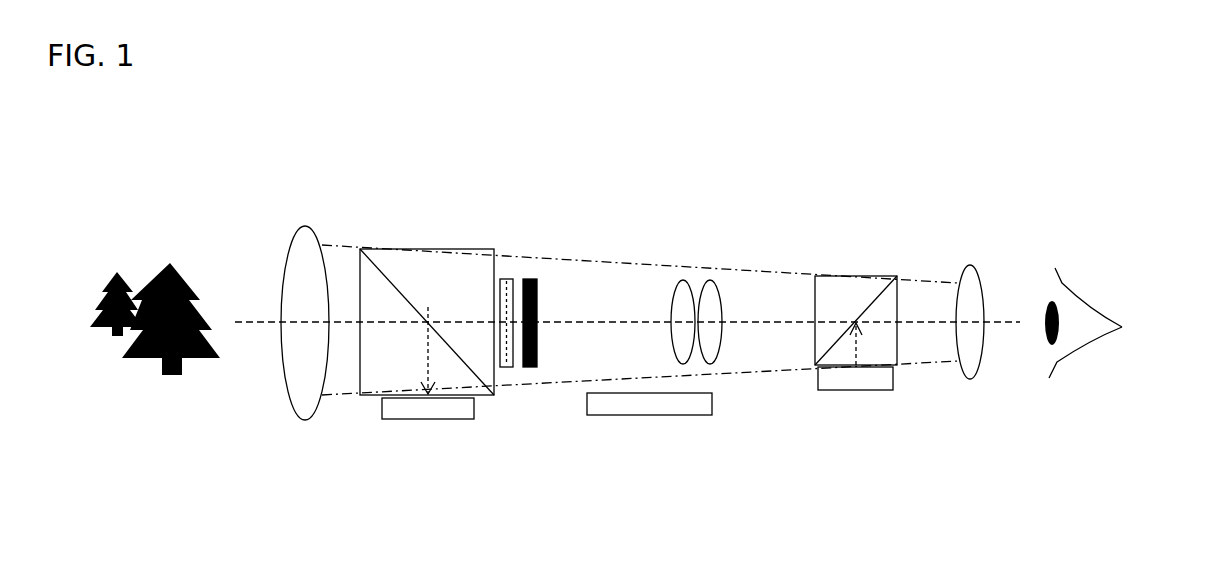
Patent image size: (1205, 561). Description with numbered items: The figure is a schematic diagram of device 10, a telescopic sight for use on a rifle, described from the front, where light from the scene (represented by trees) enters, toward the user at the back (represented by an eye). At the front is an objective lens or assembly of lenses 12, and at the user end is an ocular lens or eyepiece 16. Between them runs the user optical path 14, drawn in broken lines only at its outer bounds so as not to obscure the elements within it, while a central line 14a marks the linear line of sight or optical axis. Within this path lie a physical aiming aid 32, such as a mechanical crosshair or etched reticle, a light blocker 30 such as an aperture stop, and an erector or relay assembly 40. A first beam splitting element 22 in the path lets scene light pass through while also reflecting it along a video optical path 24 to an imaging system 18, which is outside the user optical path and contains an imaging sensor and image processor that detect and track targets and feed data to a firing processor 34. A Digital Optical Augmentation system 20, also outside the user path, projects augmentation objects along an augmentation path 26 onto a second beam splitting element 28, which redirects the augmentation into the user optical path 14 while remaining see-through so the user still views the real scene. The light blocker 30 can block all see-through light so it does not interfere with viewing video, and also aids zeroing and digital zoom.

The device 10 is at (581, 227).
The objective lens 12 is at (305, 400).
The user optical path 14 is at (735, 372).
The central line 14a is at (574, 323).
The ocular lens 16 is at (968, 380).
The imaging system 18 is at (428, 421).
The Digital Optical Augmentation system 20 is at (855, 393).
The first beam splitting element 22 is at (407, 340).
The video optical path 24 is at (428, 355).
The augmentation path 26 is at (856, 340).
The second beam splitting element 28 is at (859, 340).
The light blocker 30 is at (538, 280).
The physical aiming aid 32 is at (507, 280).
The firing processor 34 is at (653, 405).
The erector assembly 40 is at (695, 340).